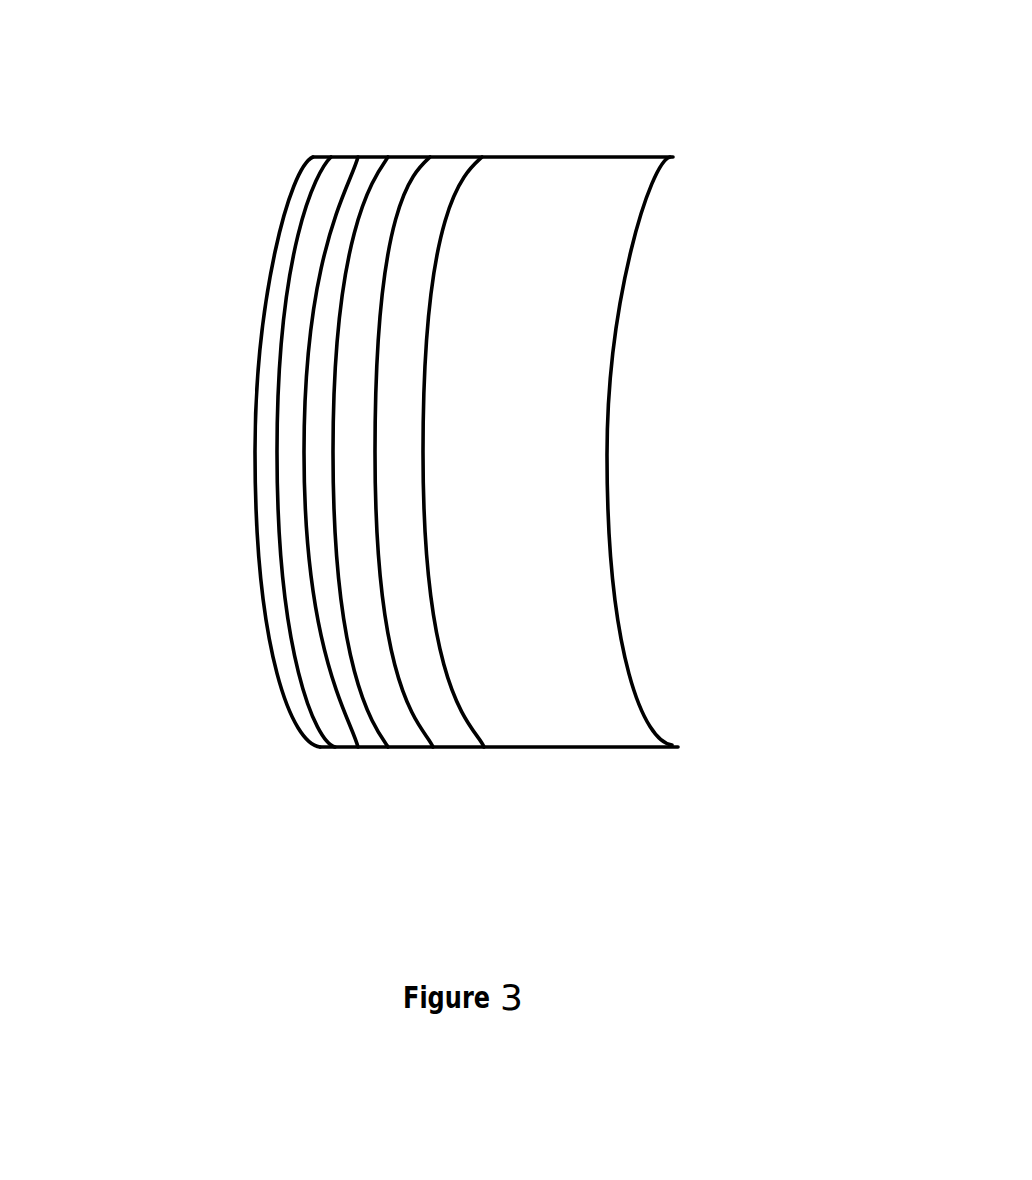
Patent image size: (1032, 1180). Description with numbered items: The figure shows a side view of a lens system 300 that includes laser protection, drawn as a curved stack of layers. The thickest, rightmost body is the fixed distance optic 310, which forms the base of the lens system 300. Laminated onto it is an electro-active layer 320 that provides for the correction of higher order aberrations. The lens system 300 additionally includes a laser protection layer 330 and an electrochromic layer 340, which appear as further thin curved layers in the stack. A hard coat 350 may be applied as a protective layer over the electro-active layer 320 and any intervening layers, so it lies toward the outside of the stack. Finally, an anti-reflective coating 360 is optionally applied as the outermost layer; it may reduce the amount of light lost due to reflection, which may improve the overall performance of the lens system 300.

The lens system 300 is at (756, 228).
The fixed distance optic 310 is at (607, 482).
The electro-active layer 320 is at (455, 747).
The laser protection layer 330 is at (403, 182).
The electrochromic layer 340 is at (384, 156).
The hard coat 350 is at (335, 747).
The anti-reflective coating 360 is at (278, 238).